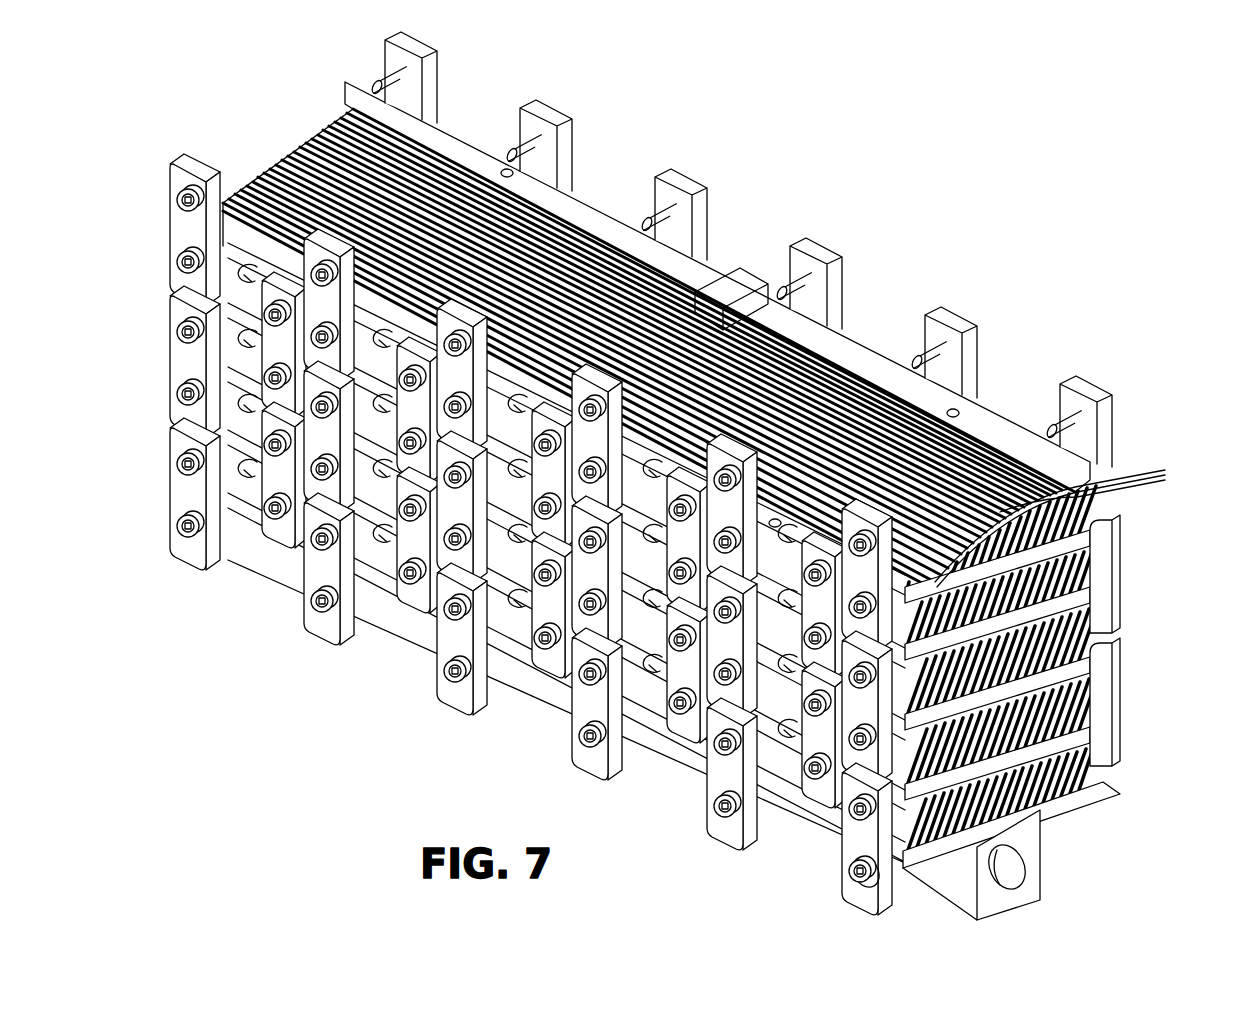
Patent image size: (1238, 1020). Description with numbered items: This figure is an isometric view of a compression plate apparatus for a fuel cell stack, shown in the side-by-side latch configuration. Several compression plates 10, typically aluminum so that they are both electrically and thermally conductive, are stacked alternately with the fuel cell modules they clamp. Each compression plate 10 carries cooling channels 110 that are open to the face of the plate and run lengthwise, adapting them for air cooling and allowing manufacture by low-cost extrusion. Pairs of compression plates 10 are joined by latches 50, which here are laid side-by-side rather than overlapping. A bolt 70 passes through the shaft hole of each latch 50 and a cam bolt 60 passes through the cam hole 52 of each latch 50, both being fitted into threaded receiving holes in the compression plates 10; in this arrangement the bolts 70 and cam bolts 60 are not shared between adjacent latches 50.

The compression plate 10 is at (393, 615).
The latch 50 is at (318, 562).
The cam hole 52 is at (182, 250).
The cam bolt 60 is at (172, 268).
The bolt 70 is at (174, 202).
The cooling channel 110 is at (1074, 525).